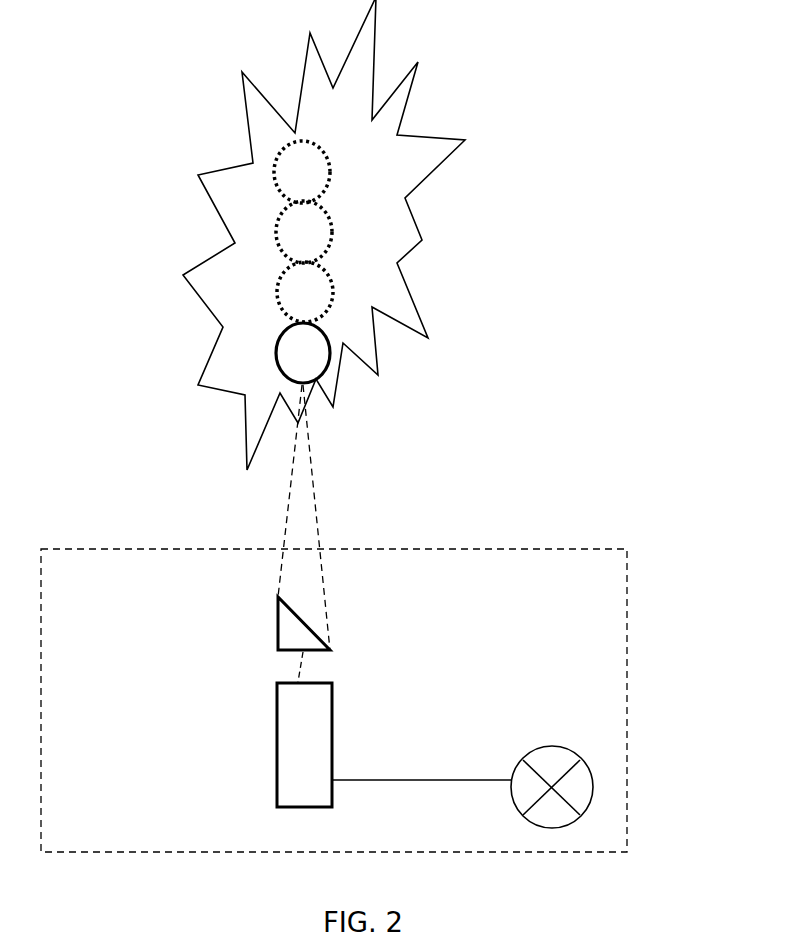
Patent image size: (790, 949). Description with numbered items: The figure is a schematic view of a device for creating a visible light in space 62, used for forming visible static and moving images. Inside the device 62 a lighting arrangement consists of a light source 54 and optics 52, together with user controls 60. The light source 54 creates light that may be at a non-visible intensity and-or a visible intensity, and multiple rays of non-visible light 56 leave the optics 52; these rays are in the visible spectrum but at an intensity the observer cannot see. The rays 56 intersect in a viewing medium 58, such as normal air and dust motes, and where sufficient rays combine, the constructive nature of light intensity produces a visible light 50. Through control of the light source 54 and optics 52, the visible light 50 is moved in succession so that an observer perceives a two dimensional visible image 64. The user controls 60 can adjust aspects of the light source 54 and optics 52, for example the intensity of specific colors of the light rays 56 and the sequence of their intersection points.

The visible light 50 is at (263, 347).
The optics 52 is at (278, 627).
The light source 54 is at (278, 748).
The non-visible light rays 56 is at (285, 517).
The viewing medium 58 is at (422, 297).
The user controls 60 is at (590, 752).
The device for creating a visible light in space 62 is at (540, 533).
The visible image 64 is at (270, 237).